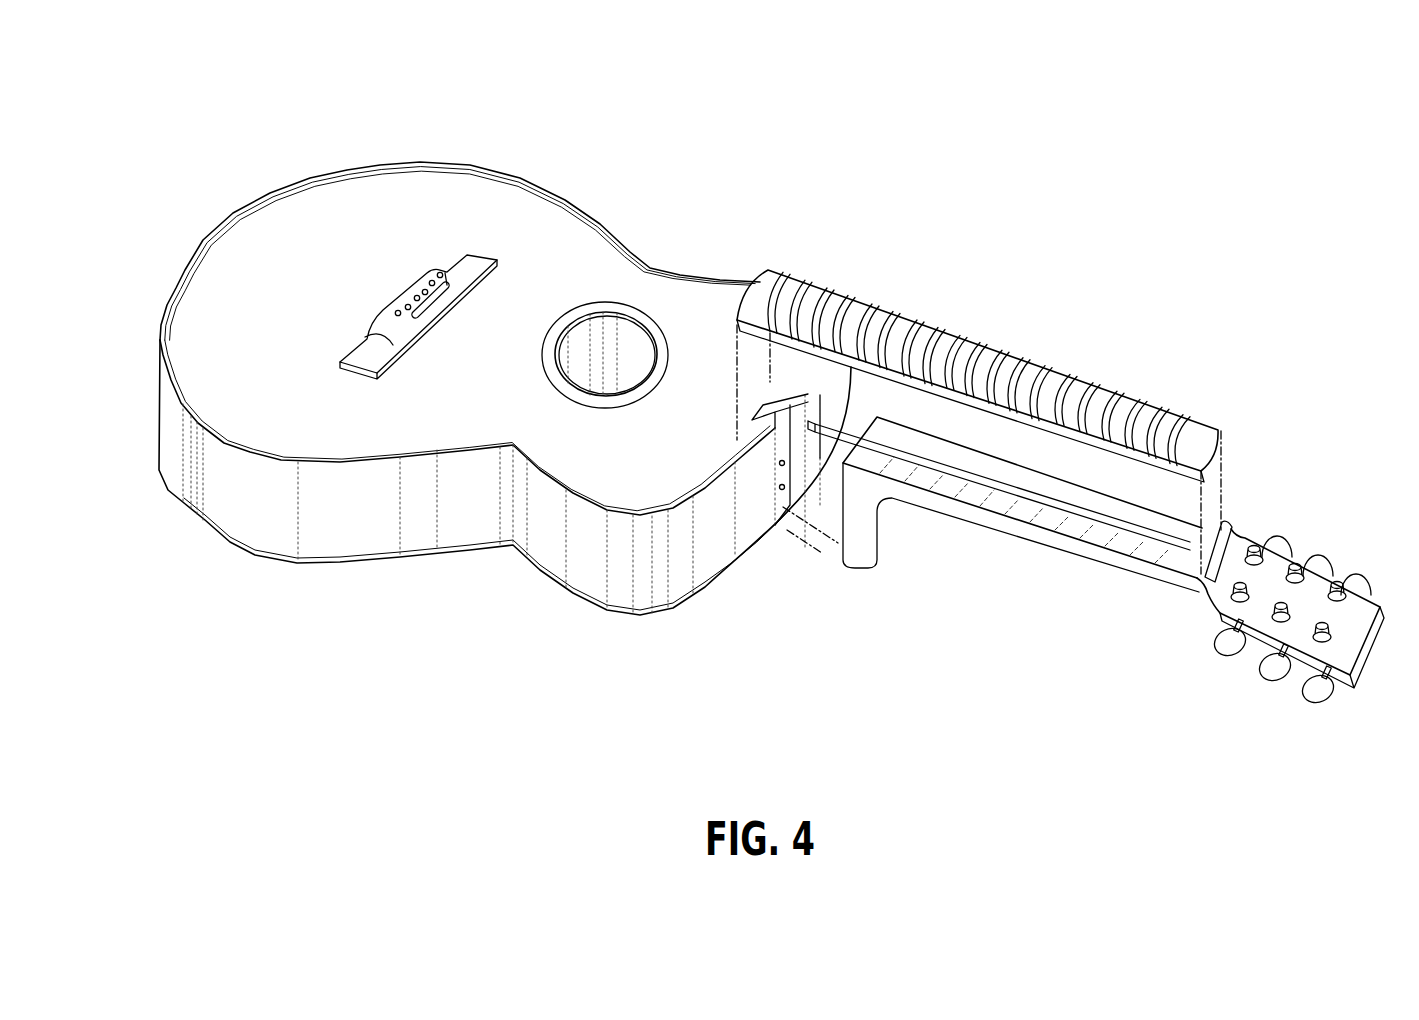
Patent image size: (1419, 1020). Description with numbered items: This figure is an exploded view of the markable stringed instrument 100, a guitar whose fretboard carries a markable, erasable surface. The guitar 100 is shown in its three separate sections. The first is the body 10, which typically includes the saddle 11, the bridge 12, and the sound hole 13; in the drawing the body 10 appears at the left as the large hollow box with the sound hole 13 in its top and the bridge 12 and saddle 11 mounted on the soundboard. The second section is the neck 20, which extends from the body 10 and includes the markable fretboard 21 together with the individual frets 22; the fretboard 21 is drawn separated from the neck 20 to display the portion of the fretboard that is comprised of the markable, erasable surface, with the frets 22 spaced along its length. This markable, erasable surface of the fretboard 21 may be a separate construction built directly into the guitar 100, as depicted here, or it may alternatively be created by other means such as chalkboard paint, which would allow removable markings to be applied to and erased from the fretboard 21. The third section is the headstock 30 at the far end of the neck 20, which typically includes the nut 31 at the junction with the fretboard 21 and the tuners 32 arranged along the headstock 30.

The markable stringed instrument 100 is at (778, 402).
The body 10 is at (505, 389).
The saddle 11 is at (424, 312).
The bridge 12 is at (363, 355).
The sound hole 13 is at (637, 360).
The neck 20 is at (1010, 518).
The markable fretboard 21 is at (877, 313).
The frets 22 is at (1133, 395).
The headstock 30 is at (1355, 638).
The nut 31 is at (1225, 536).
The tuners 32 is at (1275, 679).